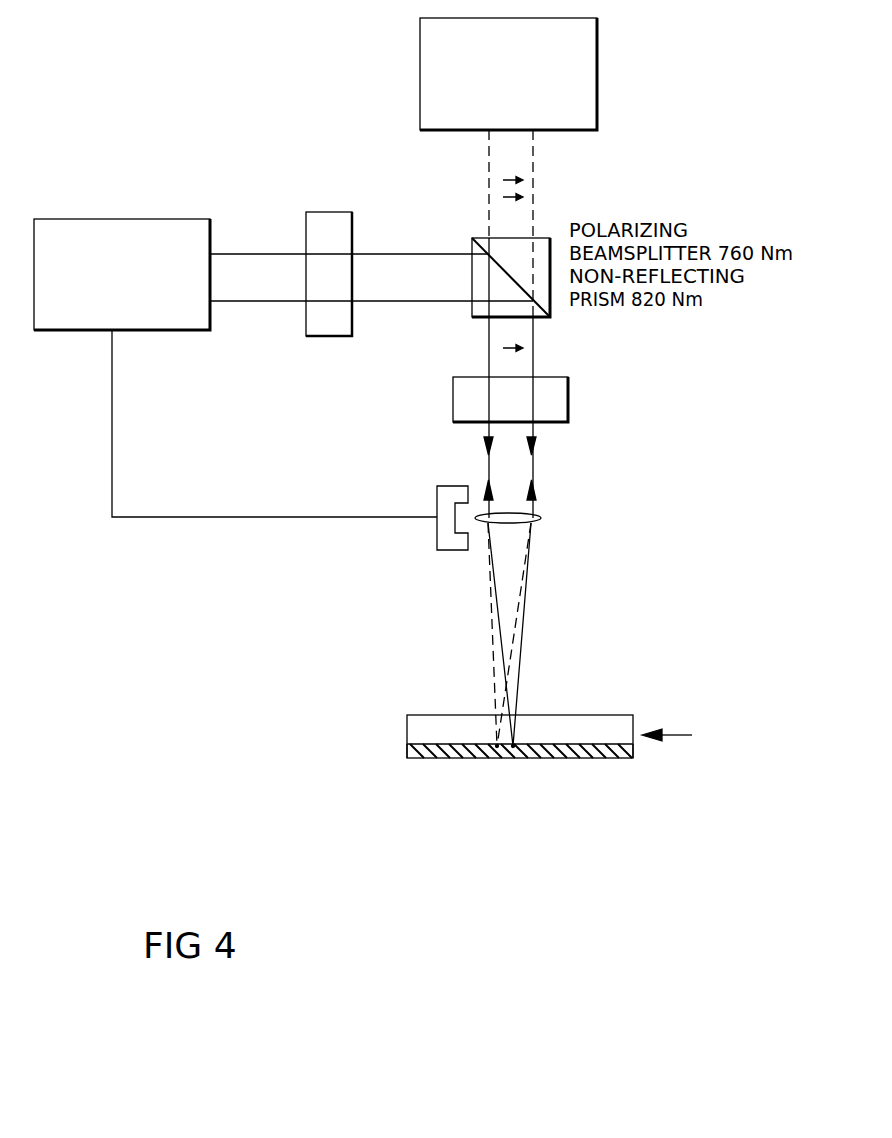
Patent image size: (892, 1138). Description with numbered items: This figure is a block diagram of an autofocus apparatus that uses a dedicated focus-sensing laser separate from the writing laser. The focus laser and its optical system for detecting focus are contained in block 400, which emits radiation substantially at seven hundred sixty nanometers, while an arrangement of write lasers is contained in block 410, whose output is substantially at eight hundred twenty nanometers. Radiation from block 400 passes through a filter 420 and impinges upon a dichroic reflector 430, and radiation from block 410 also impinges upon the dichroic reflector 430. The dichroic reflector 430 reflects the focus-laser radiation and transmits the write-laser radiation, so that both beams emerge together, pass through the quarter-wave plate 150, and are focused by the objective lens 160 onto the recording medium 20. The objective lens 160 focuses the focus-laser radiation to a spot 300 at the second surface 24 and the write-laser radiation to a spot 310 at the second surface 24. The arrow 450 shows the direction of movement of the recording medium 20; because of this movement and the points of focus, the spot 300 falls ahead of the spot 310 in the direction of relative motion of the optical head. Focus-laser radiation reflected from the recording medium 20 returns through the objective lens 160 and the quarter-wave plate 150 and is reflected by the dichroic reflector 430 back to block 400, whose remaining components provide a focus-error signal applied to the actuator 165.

The block 400 is at (99, 218).
The block 410 is at (583, 132).
The filter 420 is at (334, 338).
The dichroic reflector 430 is at (550, 311).
The quarter-wave plate 150 is at (568, 402).
The objective lens 160 is at (539, 522).
The actuator 165 is at (433, 548).
The recording medium 20 is at (491, 757).
The second surface 24 is at (591, 745).
The spot 300 is at (513, 747).
The spot 310 is at (497, 748).
The arrow 450 is at (688, 736).